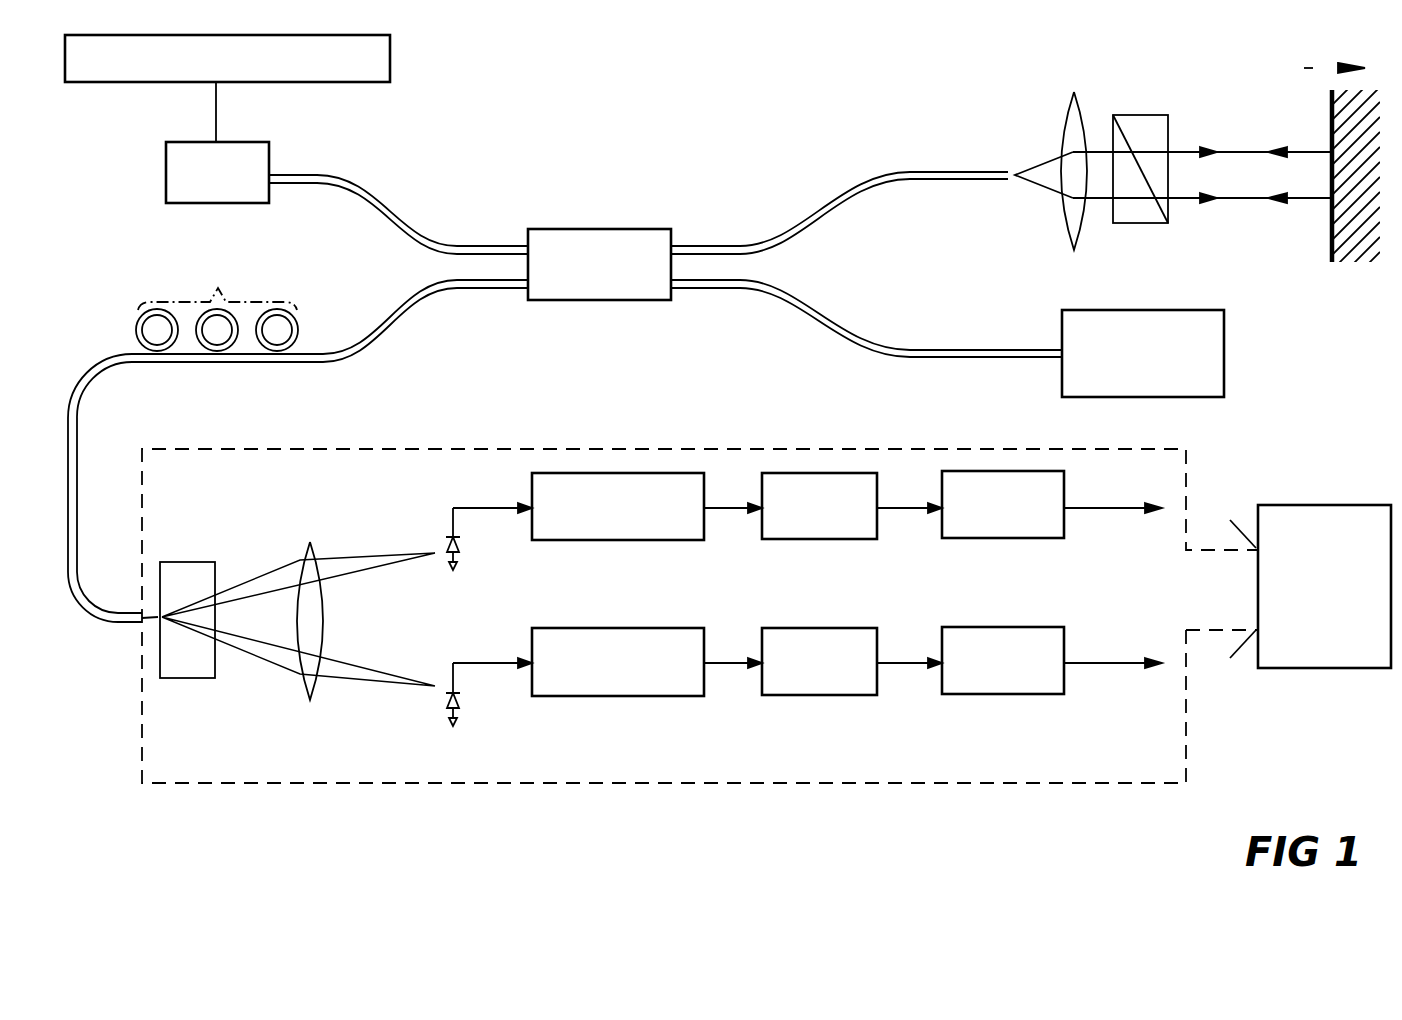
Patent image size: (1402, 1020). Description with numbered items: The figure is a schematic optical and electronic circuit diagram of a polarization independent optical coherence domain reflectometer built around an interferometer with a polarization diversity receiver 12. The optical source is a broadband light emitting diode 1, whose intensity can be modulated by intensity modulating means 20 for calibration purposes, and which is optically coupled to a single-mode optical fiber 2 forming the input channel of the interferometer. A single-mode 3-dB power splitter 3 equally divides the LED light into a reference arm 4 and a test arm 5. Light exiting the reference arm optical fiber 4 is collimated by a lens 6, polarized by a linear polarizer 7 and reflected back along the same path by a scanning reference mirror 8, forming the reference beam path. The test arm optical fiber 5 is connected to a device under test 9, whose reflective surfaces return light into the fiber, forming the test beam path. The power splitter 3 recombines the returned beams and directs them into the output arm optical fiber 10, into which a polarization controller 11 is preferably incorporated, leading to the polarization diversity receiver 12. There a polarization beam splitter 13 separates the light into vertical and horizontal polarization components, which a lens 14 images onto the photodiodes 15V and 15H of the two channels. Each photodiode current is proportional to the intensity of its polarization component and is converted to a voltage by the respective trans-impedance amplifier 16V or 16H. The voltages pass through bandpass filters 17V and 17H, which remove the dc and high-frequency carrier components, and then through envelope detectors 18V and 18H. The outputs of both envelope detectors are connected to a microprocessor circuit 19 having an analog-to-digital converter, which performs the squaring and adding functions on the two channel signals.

The light emitting diode 1 is at (256, 142).
The single-mode optical fiber 2 is at (368, 191).
The 3-dB power splitter 3 is at (624, 229).
The reference arm optical fiber 4 is at (908, 172).
The test arm optical fiber 5 is at (890, 342).
The lens 6 is at (1066, 126).
The linear polarizer 7 is at (1142, 115).
The scanning reference mirror 8 is at (1320, 116).
The device under test 9 is at (1178, 310).
The output arm optical fiber 10 is at (387, 317).
The polarization controller 11 is at (200, 272).
The polarization diversity receiver 12 is at (198, 783).
The polarization beam splitter 13 is at (190, 562).
The lens 14 is at (300, 556).
The photodiode 15V is at (472, 547).
The photodiode 15H is at (462, 700).
The trans-impedance amplifier 16V is at (620, 473).
The trans-impedance amplifier 16H is at (618, 696).
The bandpass filter 17V is at (830, 473).
The bandpass filter 17H is at (825, 695).
The envelope detector 18V is at (995, 471).
The envelope detector 18H is at (1007, 694).
The microprocessor circuit 19 is at (1312, 505).
The means for modulating the intensity 20 is at (393, 52).